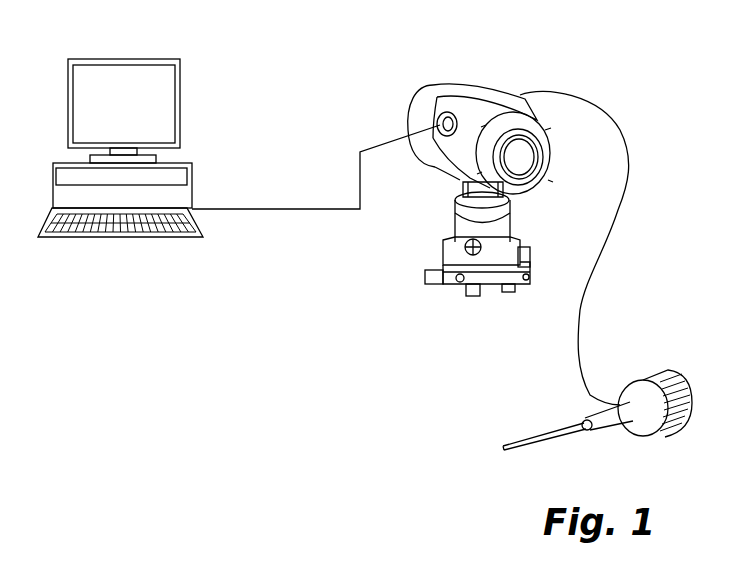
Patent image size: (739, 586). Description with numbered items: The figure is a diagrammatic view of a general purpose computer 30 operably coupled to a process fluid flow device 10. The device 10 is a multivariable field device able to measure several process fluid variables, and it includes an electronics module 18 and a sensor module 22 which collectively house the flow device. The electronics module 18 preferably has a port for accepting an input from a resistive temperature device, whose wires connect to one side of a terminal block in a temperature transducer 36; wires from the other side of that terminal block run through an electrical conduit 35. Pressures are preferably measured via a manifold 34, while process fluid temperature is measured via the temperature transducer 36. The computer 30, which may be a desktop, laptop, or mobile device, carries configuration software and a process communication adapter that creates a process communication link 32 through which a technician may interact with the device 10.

The process fluid flow device 10 is at (482, 84).
The electronics module 18 is at (446, 170).
The sensor module 22 is at (460, 220).
The general purpose computer 30 is at (132, 59).
The link 32 is at (243, 209).
The manifold 34 is at (457, 272).
The electrical conduit 35 is at (628, 188).
The temperature transducer 36 is at (638, 393).